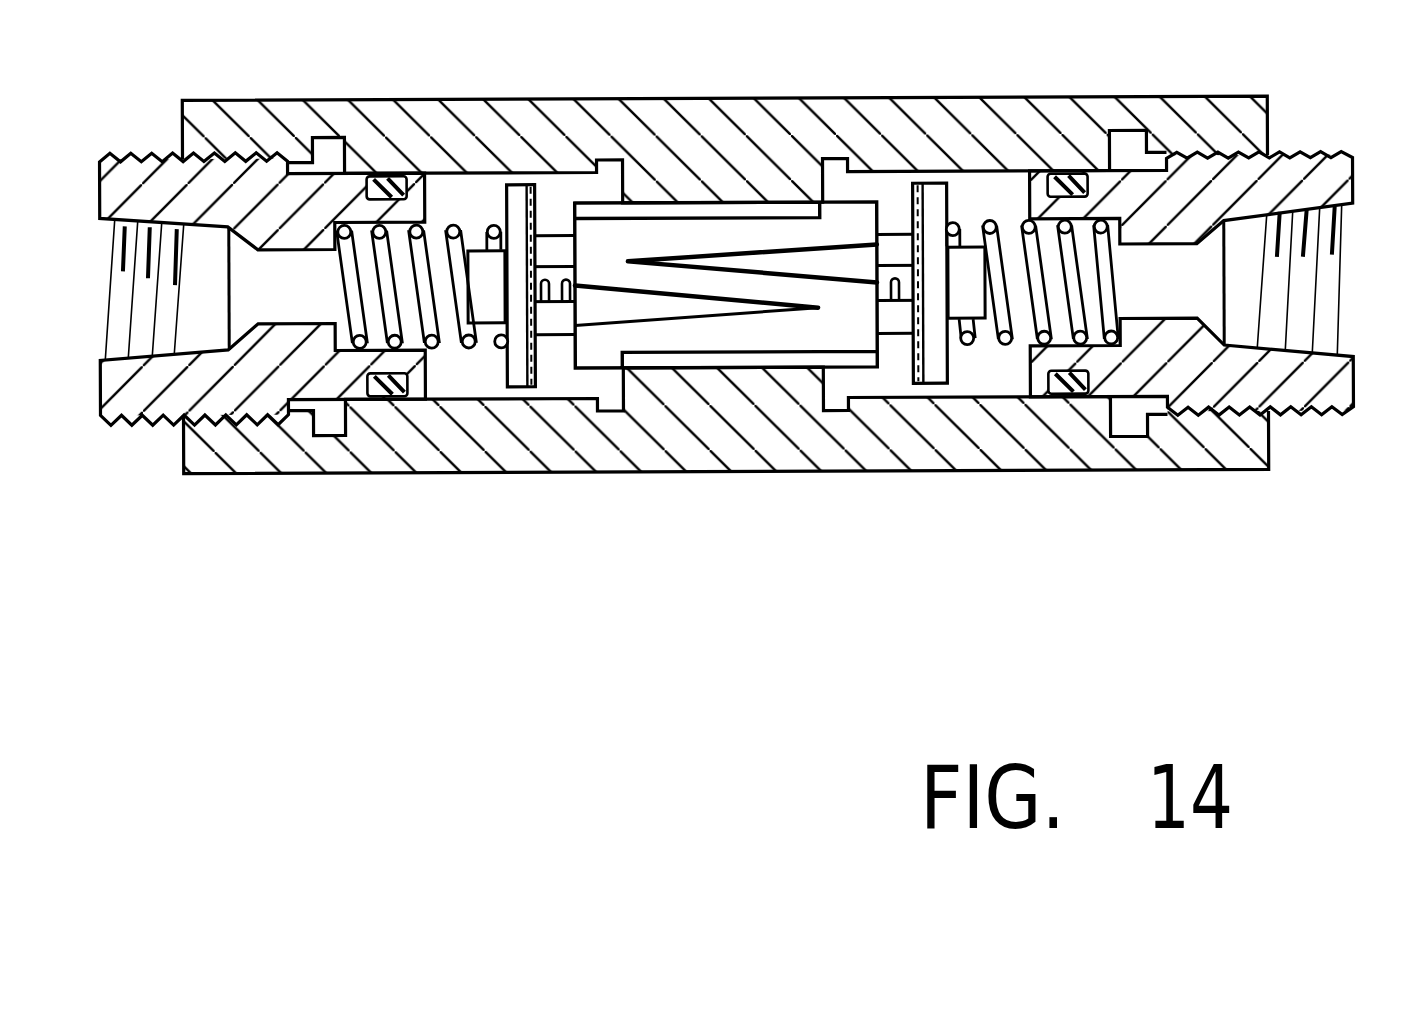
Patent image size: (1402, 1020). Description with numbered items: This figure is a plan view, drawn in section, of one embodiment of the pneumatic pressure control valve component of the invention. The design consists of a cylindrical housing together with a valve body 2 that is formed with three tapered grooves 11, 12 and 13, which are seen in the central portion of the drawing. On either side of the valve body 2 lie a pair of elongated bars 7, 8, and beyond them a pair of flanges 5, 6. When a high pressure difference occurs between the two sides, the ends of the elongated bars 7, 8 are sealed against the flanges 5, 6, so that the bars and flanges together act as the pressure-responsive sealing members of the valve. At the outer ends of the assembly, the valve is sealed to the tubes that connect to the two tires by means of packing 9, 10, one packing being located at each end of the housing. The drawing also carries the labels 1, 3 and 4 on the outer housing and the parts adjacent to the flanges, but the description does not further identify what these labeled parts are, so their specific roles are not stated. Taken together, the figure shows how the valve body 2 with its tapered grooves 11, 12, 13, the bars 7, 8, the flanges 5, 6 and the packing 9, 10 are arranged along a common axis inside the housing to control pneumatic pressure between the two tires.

The valve body 1 is at (228, 99).
The valve body 2 is at (583, 198).
The spring 3 is at (452, 237).
The threaded fitting 4 is at (1027, 213).
The flange 5 is at (510, 352).
The flange 6 is at (933, 384).
The elongated bar 7 is at (560, 305).
The elongated bar 8 is at (900, 302).
The packing 9 is at (398, 398).
The packing 10 is at (1066, 396).
The tapered groove 11 is at (650, 204).
The tapered groove 12 is at (723, 249).
The tapered groove 13 is at (760, 311).